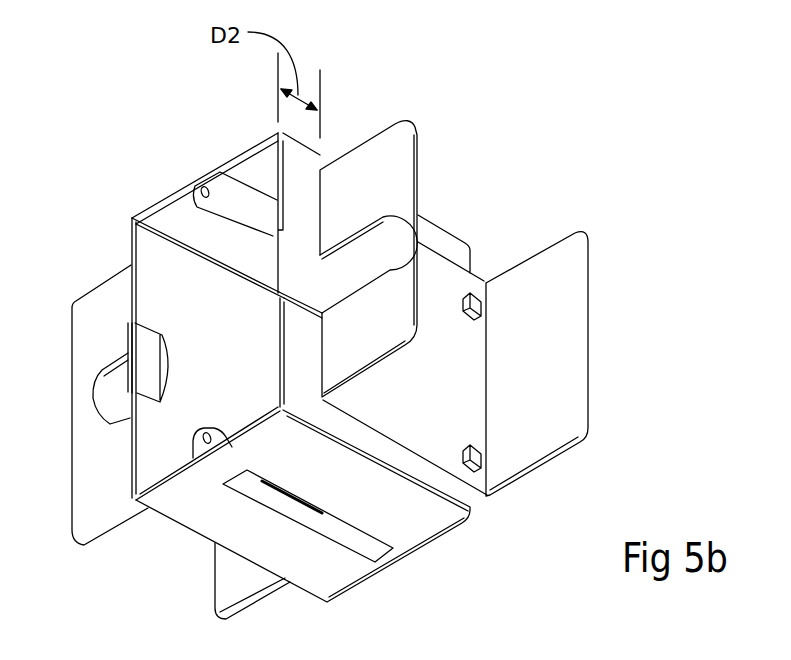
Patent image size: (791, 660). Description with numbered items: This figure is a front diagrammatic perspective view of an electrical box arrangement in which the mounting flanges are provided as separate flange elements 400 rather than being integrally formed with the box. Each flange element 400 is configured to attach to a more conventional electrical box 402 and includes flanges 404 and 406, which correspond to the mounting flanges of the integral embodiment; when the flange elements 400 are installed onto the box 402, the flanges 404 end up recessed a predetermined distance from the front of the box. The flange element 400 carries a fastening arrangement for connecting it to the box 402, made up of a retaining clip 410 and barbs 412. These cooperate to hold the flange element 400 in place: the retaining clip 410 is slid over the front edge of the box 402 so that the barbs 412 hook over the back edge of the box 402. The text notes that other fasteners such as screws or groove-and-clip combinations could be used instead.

The flange element 400 is at (95, 308).
The electrical box 402 is at (400, 533).
The flange 404 is at (410, 170).
The flange 406 is at (573, 250).
The retaining clip 410 is at (300, 260).
The barbs 412 is at (462, 448).